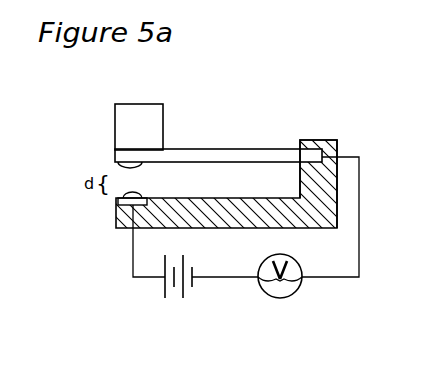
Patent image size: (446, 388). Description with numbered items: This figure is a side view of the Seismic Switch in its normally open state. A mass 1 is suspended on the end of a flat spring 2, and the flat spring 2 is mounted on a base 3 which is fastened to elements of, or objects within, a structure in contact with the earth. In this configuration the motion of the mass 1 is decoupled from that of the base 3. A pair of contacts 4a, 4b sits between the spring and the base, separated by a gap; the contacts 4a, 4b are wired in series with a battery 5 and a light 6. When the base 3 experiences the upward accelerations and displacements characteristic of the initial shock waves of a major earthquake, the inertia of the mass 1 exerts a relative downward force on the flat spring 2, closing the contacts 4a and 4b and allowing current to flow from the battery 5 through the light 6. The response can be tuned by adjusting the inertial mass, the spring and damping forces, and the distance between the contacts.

The mass 1 is at (113, 128).
The flat spring 2 is at (204, 149).
The base 3 is at (319, 139).
The contact 4a is at (116, 166).
The contact 4b is at (116, 195).
The battery 5 is at (162, 293).
The light 6 is at (305, 288).